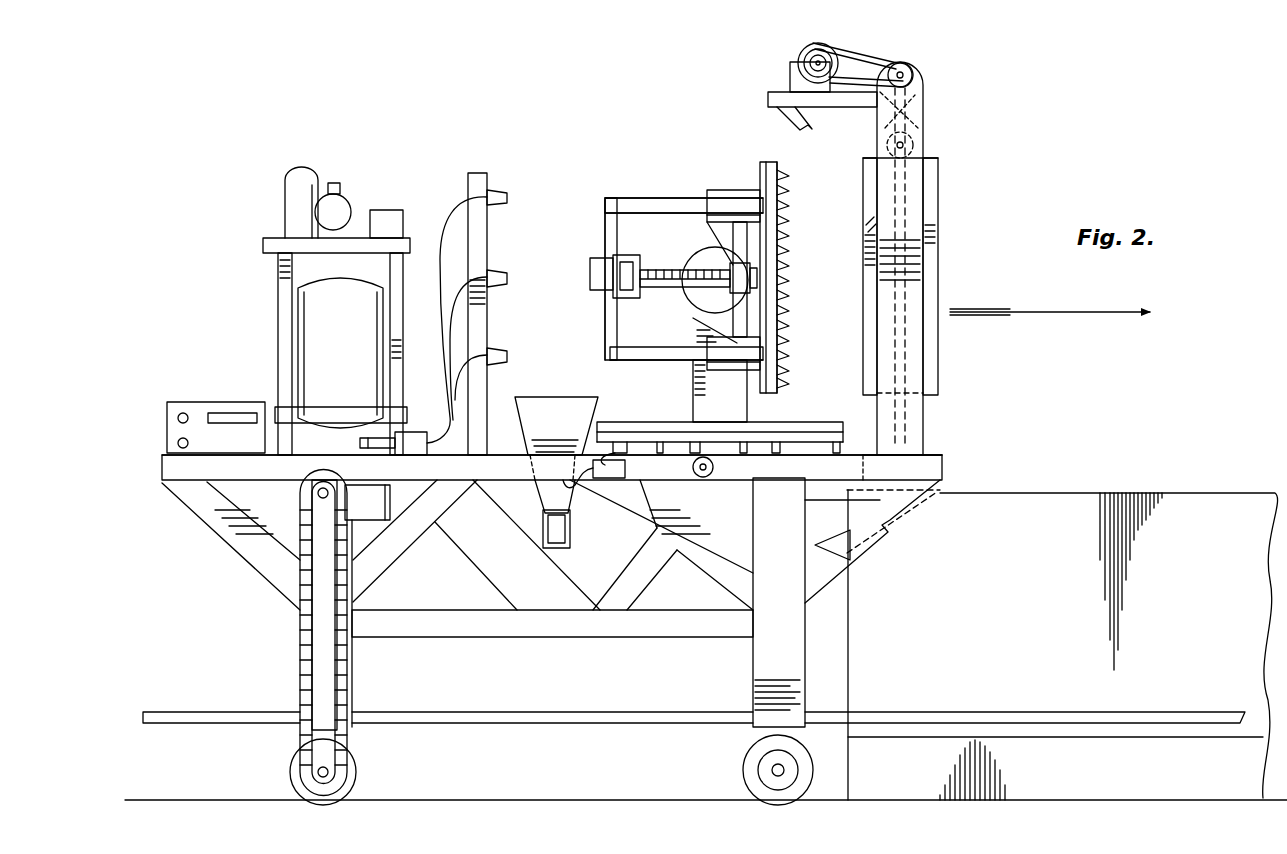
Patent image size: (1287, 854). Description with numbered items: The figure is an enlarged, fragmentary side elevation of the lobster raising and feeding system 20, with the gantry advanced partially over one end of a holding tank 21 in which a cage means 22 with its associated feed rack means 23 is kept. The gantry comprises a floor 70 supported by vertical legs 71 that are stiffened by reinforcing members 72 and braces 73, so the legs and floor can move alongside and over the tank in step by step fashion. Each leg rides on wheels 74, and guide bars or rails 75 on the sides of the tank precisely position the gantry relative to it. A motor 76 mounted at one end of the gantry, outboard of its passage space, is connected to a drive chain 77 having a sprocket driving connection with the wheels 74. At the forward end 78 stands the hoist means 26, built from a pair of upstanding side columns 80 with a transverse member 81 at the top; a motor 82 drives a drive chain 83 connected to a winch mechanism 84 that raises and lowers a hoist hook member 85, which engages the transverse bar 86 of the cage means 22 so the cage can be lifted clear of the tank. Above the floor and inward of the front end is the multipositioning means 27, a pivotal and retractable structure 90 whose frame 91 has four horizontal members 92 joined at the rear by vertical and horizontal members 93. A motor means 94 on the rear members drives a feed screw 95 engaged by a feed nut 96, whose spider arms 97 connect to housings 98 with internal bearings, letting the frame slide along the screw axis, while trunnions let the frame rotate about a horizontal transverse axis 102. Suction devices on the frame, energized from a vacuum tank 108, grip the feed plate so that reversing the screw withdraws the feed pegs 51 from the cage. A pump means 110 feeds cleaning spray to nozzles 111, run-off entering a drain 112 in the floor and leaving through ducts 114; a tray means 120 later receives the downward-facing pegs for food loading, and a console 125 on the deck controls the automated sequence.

The system 20 is at (438, 130).
The holding tank 21 is at (1237, 510).
The cage means 22 is at (940, 258).
The feed rack means 23 is at (792, 334).
The hoist means 26 is at (936, 72).
The multipositioning means 27 is at (657, 190).
The feed pegs 51 is at (790, 170).
The floor 70 is at (198, 470).
The legs 71 is at (325, 678).
The reinforcing members 72 is at (531, 637).
The braces 73 is at (437, 493).
The wheels 74 is at (295, 768).
The guide bars or rails 75 is at (200, 715).
The motor 76 is at (368, 503).
The drive chain 77 is at (300, 637).
The forward end 78 is at (940, 467).
The side columns 80 is at (937, 347).
The transverse member 81 is at (832, 102).
The motor 82 is at (787, 50).
The drive chain 83 is at (870, 52).
The winch mechanism 84 is at (910, 80).
The hoist hook member 85 is at (927, 145).
The transverse bar or rod 86 is at (898, 145).
The pivotal and retractable structure 90 is at (628, 200).
The frame 91 is at (610, 205).
The horizontal members 92 is at (640, 357).
The vertical and horizontal members 93 is at (612, 243).
The motor means 94 is at (595, 275).
The feed screw 95 is at (667, 270).
The feed nut 96 is at (750, 290).
The spider arms 97 is at (740, 238).
The housings 98 is at (722, 198).
The horizontal transverse axis 102 is at (697, 300).
The vacuum tank 108 is at (322, 312).
The pump means 110 is at (412, 440).
The nozzles 111 is at (498, 187).
The drain 112 is at (555, 410).
The ducts 114 is at (560, 548).
The tray means 120 is at (852, 430).
The console 125 is at (200, 395).